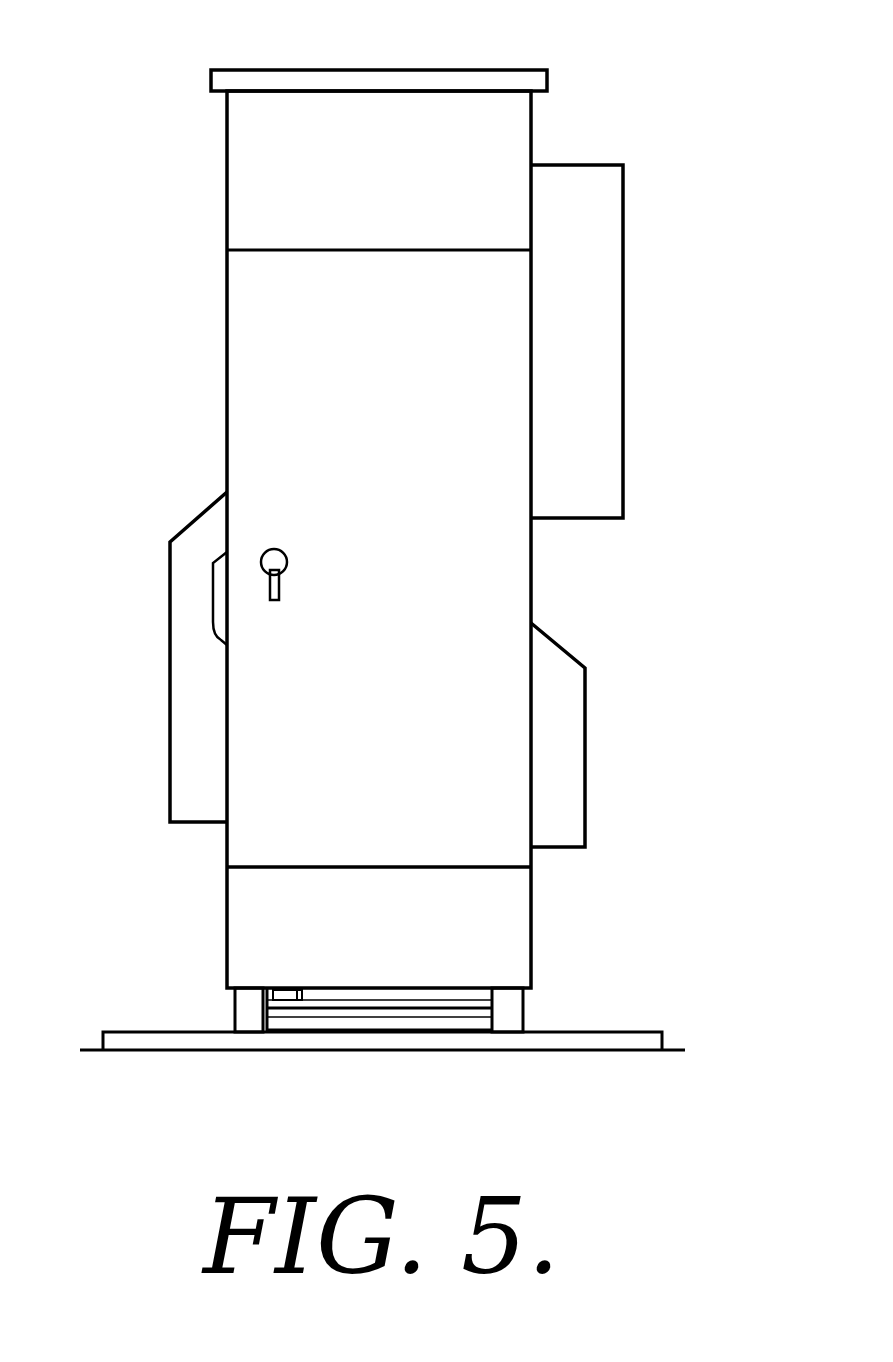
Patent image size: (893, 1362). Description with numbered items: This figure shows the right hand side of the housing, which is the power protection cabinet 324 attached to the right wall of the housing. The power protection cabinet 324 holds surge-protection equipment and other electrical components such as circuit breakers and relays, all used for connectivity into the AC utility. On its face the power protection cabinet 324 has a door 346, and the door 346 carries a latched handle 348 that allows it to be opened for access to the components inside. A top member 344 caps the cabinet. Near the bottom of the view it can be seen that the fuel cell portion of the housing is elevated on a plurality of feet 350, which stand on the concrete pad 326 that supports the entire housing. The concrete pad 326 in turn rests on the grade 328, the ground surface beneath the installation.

The power protection cabinet 324 is at (240, 413).
The top cap 344 is at (477, 107).
The door 346 is at (512, 323).
The latched handle 348 is at (273, 548).
The feet 350 is at (247, 1010).
The concrete pad 326 is at (657, 1051).
The grade 328 is at (224, 1122).